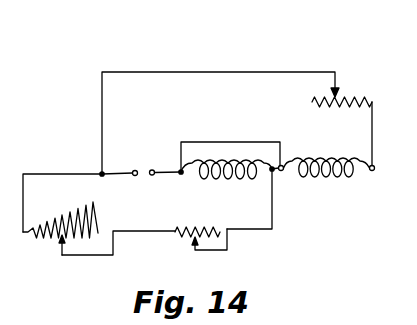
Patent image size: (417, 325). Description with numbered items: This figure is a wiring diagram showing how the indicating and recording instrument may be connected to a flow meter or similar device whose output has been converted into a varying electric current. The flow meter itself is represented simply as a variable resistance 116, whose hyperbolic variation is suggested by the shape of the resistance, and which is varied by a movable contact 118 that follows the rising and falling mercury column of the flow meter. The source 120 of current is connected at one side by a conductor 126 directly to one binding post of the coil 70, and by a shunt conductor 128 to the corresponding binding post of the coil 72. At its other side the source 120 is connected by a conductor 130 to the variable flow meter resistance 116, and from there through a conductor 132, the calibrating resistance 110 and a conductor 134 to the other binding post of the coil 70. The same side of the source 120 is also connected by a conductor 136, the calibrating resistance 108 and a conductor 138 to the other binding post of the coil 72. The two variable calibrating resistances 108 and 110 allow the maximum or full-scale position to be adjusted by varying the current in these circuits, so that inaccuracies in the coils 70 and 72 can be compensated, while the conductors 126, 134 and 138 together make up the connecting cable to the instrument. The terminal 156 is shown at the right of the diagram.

The coil 70 is at (220, 179).
The coil 72 is at (320, 178).
The calibrating resistance 108 is at (355, 96).
The calibrating resistance 110 is at (212, 239).
The variable resistance 116 is at (88, 205).
The movable contact 118 is at (62, 240).
The source of current 120 is at (138, 176).
The conductor 126 is at (152, 170).
The shunt conductor 128 is at (249, 142).
The conductor 130 is at (37, 172).
The conductor 132 is at (130, 230).
The conductor 134 is at (273, 219).
The conductor 136 is at (190, 72).
The conductor 138 is at (373, 139).
The terminal 156 is at (394, 176).